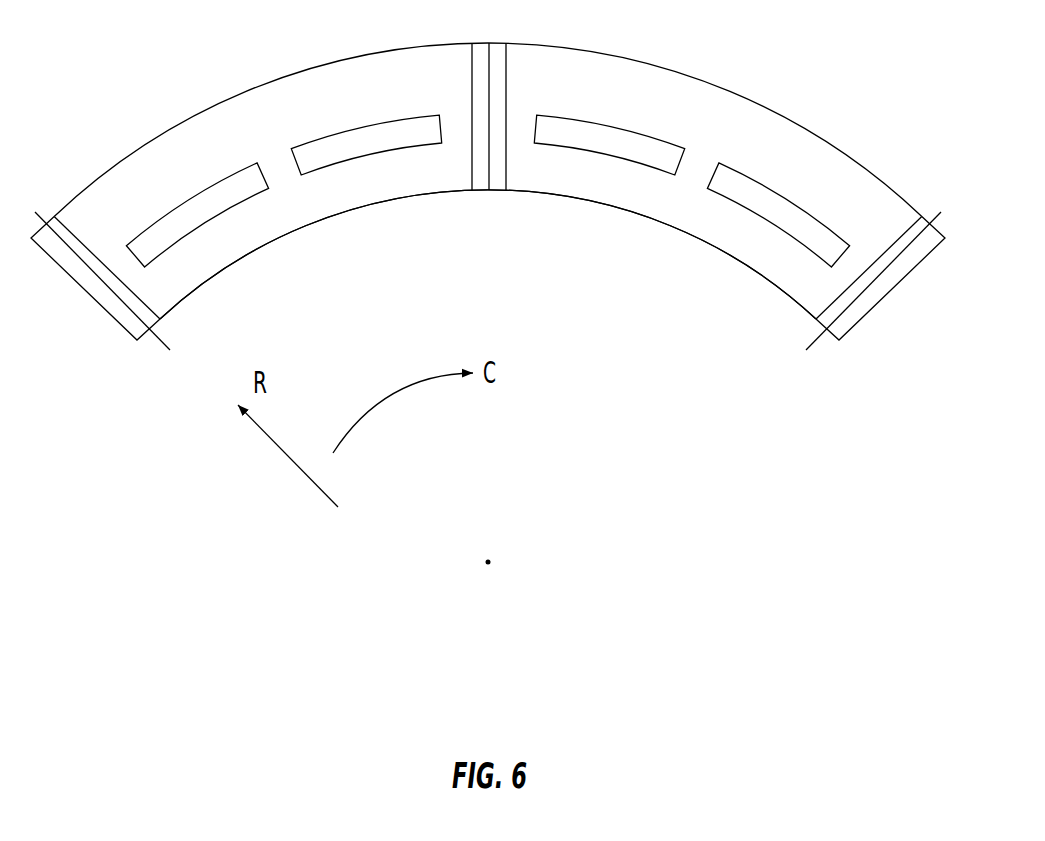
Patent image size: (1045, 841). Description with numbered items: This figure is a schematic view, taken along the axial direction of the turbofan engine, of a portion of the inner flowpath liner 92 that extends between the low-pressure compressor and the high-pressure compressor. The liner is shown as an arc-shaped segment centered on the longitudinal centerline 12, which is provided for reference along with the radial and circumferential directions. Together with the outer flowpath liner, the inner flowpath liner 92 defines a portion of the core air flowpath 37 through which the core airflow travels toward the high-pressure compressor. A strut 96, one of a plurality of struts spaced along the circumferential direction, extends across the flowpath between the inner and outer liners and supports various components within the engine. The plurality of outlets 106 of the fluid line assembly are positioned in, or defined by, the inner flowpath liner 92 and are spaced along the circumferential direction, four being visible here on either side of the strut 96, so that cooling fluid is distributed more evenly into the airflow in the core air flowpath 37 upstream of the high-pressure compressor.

The longitudinal centerline 12 is at (488, 559).
The core air flowpath 37 is at (347, 88).
The inner flowpath liner 92 is at (323, 208).
The strut 96 is at (497, 85).
The outlets 106 is at (210, 207).